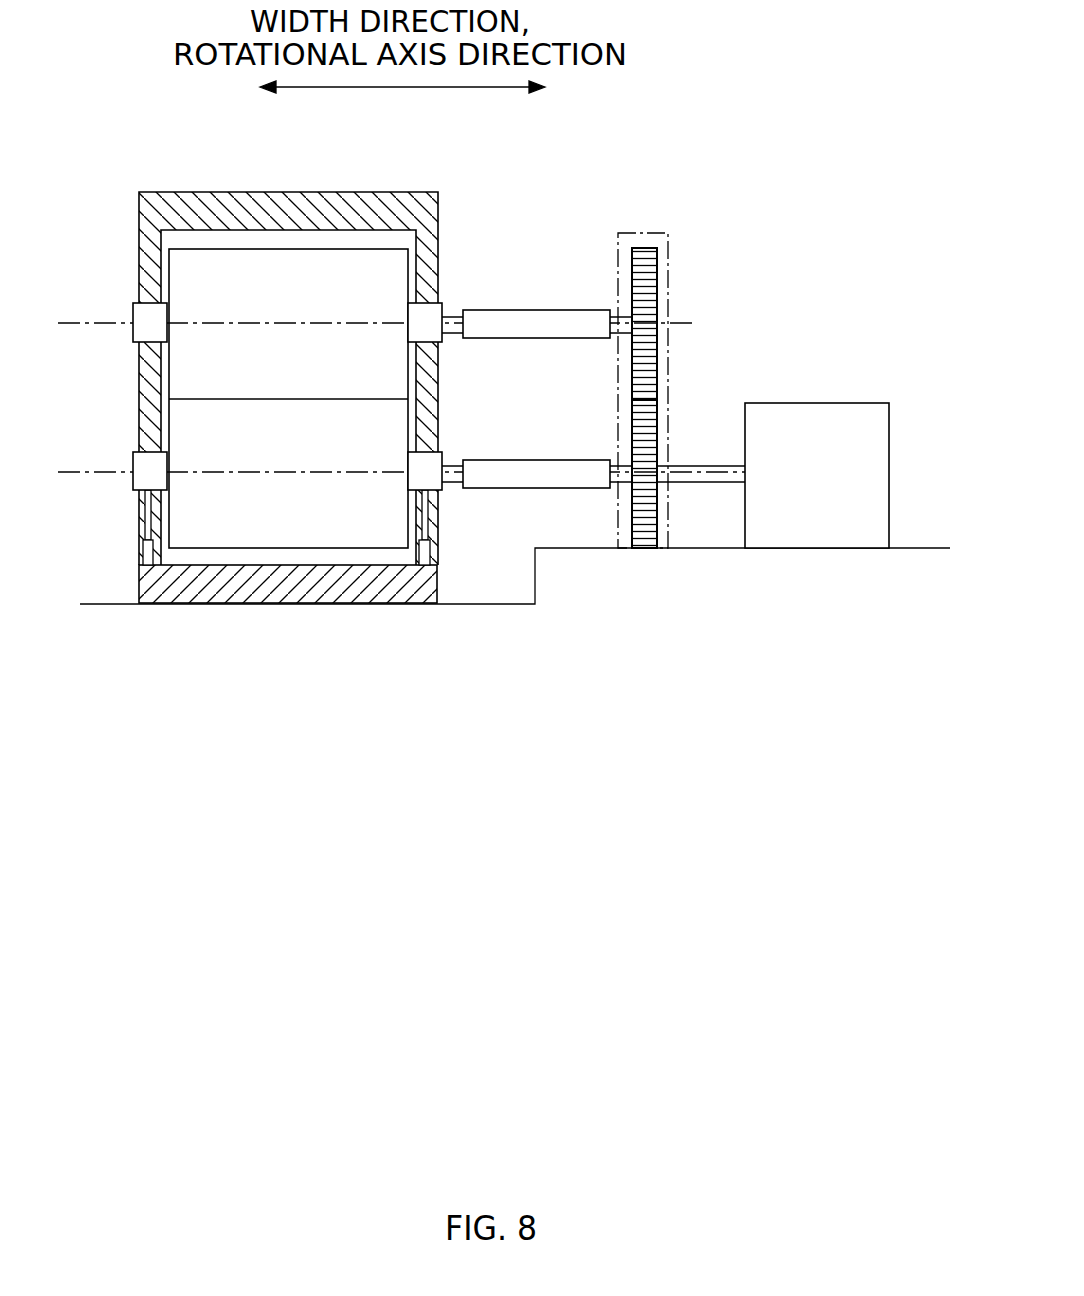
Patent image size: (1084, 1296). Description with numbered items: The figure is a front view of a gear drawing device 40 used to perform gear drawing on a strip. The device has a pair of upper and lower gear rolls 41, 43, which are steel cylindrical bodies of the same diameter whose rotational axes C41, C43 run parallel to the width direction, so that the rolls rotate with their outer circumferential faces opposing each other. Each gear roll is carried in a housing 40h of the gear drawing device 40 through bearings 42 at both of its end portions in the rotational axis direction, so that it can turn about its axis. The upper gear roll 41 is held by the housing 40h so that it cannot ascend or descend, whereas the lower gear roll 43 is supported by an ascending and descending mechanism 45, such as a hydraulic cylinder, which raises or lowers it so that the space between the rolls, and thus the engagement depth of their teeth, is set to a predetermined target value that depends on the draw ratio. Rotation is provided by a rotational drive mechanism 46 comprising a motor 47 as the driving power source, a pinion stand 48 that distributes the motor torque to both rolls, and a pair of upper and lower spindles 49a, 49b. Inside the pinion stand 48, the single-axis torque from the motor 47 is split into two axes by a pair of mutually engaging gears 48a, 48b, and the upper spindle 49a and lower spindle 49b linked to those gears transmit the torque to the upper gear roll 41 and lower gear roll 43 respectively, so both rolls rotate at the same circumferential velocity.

The gear drawing device 40 is at (282, 326).
The housing 40h is at (384, 186).
The upper gear roll 41 is at (288, 246).
The bearings 42 is at (140, 335).
The lower gear roll 43 is at (269, 556).
The ascending and descending mechanism 45 is at (147, 575).
The rotational drive mechanism 46 is at (744, 210).
The motor 47 is at (822, 413).
The pinion stand 48 is at (698, 346).
The gear 48a is at (657, 276).
The gear 48b is at (657, 423).
The upper spindle 49a is at (551, 317).
The lower spindle 49b is at (551, 462).
The rotational axis C41 is at (88, 320).
The rotational axis C43 is at (86, 480).